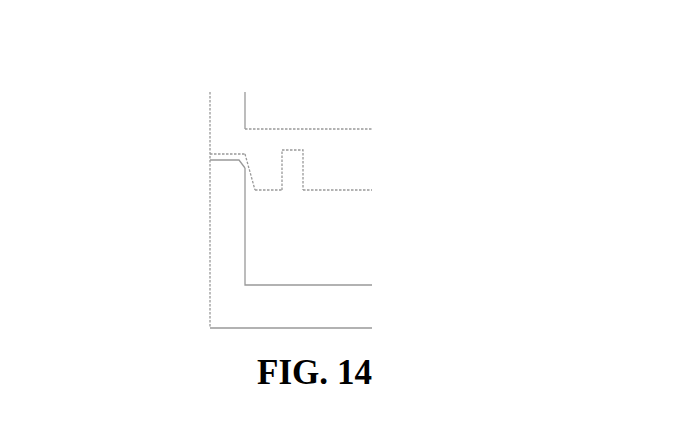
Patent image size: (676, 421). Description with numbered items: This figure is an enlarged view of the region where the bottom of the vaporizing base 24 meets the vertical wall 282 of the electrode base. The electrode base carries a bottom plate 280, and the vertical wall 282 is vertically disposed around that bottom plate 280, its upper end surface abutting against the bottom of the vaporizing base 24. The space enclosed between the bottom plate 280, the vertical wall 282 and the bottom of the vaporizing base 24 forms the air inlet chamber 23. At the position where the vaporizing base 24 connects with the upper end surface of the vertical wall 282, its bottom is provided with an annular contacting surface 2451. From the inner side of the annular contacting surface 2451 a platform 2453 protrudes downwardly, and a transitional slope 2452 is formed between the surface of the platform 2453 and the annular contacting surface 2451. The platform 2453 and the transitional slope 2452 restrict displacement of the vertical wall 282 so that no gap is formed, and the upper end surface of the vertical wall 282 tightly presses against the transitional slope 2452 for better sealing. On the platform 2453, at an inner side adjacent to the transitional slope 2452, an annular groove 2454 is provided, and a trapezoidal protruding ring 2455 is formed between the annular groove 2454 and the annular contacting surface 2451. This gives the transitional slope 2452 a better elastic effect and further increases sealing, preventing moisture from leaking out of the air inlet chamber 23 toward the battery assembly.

The vaporizing base 24 is at (230, 123).
The air inlet chamber 23 is at (315, 249).
The bottom plate 280 is at (320, 309).
The vertical wall 282 is at (215, 244).
The annular contacting surface 2451 is at (214, 167).
The transitional slope 2452 is at (233, 179).
The platform 2453 is at (340, 186).
The annular groove 2454 is at (289, 169).
The trapezoidal protruding ring 2455 is at (259, 172).